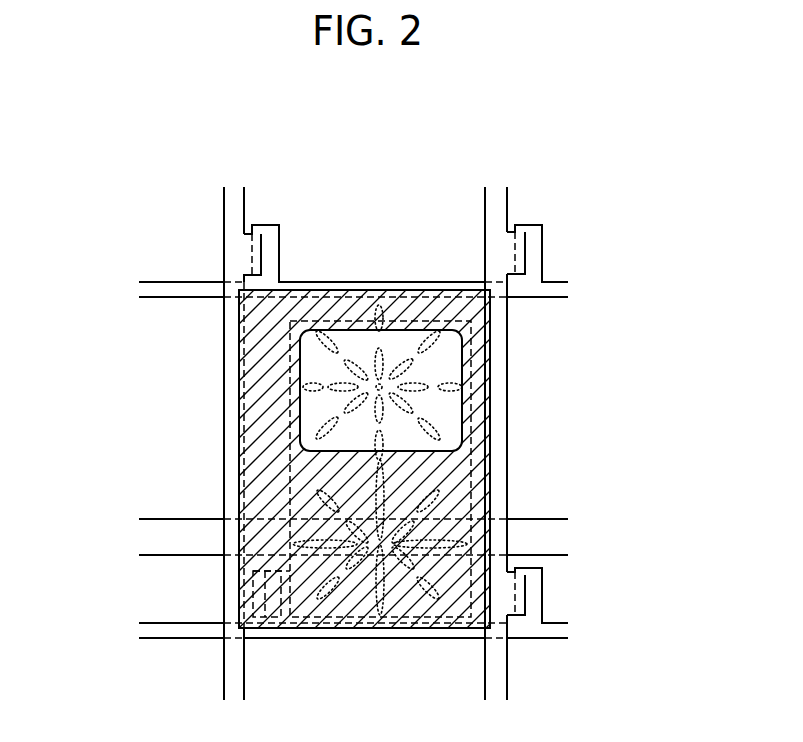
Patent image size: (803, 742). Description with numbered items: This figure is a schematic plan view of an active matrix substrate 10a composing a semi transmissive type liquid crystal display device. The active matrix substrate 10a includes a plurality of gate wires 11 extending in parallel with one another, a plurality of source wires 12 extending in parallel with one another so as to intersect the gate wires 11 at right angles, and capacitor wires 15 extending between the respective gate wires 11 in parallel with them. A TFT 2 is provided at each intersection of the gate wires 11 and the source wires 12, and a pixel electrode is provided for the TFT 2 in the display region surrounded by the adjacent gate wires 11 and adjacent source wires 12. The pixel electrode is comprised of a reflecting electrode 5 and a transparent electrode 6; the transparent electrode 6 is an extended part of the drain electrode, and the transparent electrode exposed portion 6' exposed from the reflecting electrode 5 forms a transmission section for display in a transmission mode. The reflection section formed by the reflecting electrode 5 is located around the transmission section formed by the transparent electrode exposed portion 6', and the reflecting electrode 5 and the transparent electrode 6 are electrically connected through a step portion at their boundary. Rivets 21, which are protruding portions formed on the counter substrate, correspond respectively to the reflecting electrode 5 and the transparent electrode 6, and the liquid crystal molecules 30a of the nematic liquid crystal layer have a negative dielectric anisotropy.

The active matrix substrate 10a is at (346, 168).
The source wires 12 is at (235, 196).
The liquid crystal molecules 30a is at (340, 318).
The capacitor wires 15 is at (152, 537).
The gate wires 11 is at (152, 634).
The reflecting electrode 5 is at (492, 488).
The transparent electrode 6 is at (437, 469).
The transparent electrode exposed portion 6' is at (437, 386).
The rivets 21 is at (345, 548).
The TFT 2 is at (265, 595).